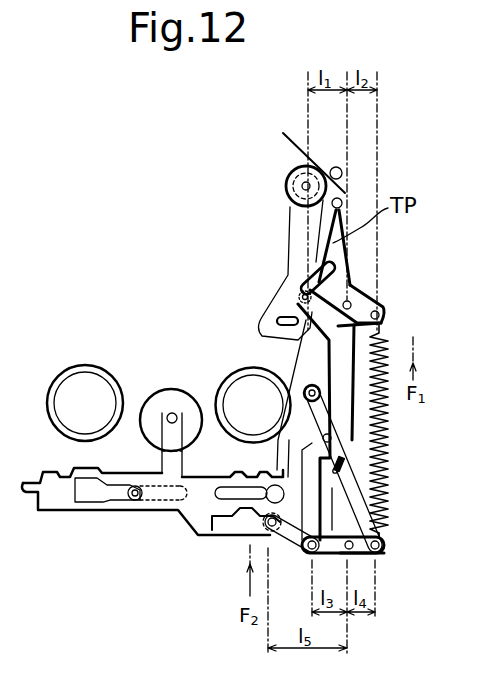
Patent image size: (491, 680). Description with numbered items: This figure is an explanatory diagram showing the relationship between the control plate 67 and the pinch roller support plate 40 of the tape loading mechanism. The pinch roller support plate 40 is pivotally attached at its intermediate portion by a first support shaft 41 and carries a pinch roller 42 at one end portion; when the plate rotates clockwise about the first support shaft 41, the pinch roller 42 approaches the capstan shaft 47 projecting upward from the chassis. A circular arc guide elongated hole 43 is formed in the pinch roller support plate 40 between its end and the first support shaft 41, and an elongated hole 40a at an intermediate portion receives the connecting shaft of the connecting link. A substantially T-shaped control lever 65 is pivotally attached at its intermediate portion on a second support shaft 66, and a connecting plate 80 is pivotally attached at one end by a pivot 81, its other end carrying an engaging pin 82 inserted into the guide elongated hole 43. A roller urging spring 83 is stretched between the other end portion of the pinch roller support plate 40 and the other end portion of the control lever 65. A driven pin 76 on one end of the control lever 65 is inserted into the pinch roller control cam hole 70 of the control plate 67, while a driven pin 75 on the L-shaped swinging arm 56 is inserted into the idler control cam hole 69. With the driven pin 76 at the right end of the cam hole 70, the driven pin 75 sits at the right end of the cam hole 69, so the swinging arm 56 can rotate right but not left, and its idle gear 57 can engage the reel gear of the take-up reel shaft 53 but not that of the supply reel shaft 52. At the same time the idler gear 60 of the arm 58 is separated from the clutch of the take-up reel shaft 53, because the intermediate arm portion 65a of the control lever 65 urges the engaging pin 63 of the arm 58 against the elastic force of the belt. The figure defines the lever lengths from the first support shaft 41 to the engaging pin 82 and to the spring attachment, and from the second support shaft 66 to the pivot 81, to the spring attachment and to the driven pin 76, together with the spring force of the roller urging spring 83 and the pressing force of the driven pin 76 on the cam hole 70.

The pinch roller support plate 40 is at (288, 232).
The elongated hole 40a is at (268, 322).
The first support shaft 41 is at (352, 302).
The pinch roller 42 is at (290, 190).
The circular arc guide elongated hole 43 is at (333, 262).
The capstan shaft 47 is at (336, 167).
The supply reel shaft 52 is at (60, 376).
The take-up reel shaft 53 is at (228, 378).
The swinging arm 56 is at (162, 470).
The idle gear 57 is at (160, 392).
The arm 58 is at (383, 440).
The idler gear 60 is at (312, 385).
The engaging pin 63 is at (343, 464).
The control lever 65 is at (381, 548).
The intermediate arm portion 65a is at (347, 502).
The second support shaft 66 is at (375, 556).
The control plate 67 is at (38, 520).
The idler control cam hole 69 is at (90, 503).
The pinch roller control cam hole 70 is at (212, 537).
The driven pin 75 is at (133, 503).
The driven pin 76 is at (265, 540).
The connecting plate 80 is at (345, 358).
The pivot 81 is at (307, 555).
The engaging pin 82 is at (300, 292).
The roller urging spring 83 is at (383, 510).